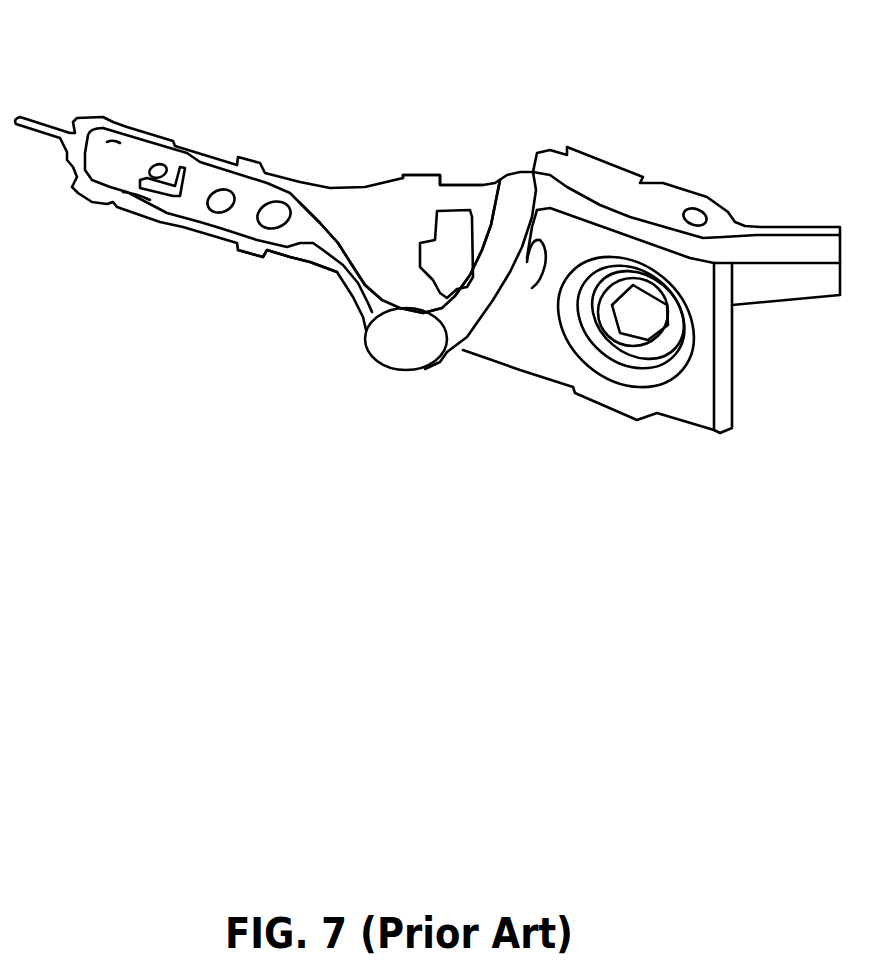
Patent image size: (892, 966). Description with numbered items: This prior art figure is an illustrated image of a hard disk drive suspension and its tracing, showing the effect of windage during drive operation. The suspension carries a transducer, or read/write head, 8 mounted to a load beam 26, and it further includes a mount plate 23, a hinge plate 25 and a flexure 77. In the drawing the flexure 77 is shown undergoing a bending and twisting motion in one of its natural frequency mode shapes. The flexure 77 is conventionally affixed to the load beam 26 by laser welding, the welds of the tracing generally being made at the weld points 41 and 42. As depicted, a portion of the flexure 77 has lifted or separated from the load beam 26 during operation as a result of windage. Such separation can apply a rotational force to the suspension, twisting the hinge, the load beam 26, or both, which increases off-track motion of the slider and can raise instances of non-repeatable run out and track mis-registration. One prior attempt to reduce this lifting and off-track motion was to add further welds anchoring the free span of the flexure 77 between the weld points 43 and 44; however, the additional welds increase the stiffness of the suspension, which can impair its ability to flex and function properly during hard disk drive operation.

The transducer 8 is at (86, 128).
The load beam 26 is at (312, 252).
The weld point 41 is at (335, 240).
The hinge plate 25 is at (420, 218).
The weld point 42 is at (517, 210).
The flexure 77 is at (380, 330).
The weld point 43 is at (432, 318).
The weld point 44 is at (433, 352).
The mount plate 23 is at (647, 340).